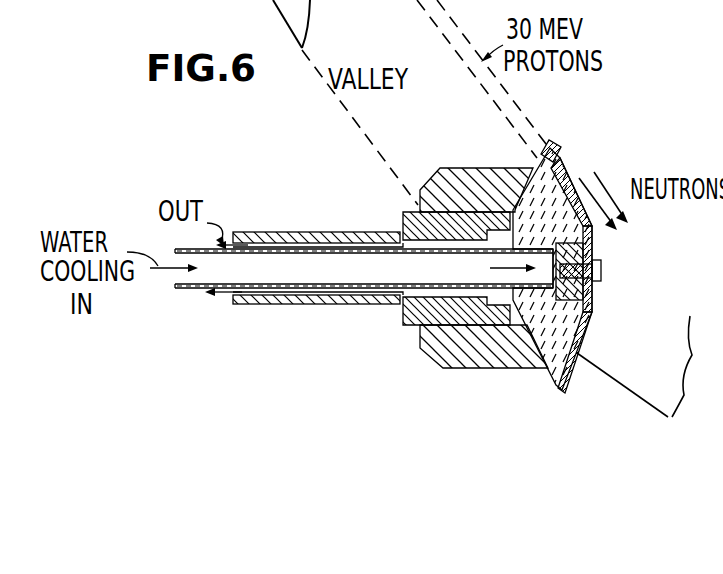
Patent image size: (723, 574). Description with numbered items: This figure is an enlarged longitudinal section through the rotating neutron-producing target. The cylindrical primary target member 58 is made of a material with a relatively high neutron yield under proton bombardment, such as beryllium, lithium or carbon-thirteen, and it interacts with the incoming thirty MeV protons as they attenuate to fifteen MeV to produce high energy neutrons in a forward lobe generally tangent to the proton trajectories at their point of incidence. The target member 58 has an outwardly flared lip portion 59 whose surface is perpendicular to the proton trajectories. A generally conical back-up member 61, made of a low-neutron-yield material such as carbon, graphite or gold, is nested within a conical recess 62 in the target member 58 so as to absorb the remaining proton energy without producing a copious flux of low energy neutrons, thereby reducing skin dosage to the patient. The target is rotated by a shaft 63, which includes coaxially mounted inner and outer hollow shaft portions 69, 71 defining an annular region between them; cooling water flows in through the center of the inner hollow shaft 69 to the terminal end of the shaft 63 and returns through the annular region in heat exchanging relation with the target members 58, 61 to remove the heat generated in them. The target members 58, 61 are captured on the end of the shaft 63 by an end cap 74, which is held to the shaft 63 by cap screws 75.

The primary target member 58 is at (445, 186).
The outwardly flared lip portion 59 is at (547, 147).
The back-up member 61 is at (568, 178).
The conical recess 62 is at (529, 193).
The shaft 63 is at (342, 226).
The inner hollow shaft portion 69 is at (183, 288).
The outer hollow shaft portion 71 is at (258, 231).
The end cap 74 is at (594, 305).
The cap screws 75 is at (601, 272).